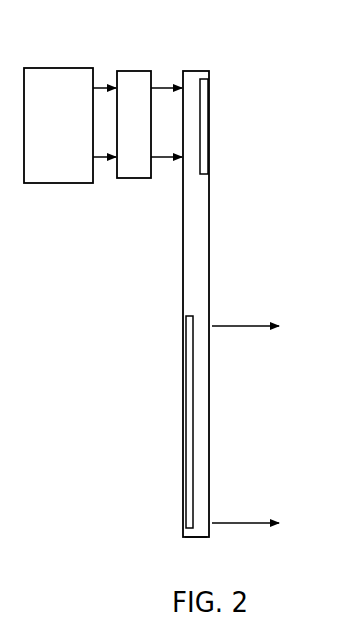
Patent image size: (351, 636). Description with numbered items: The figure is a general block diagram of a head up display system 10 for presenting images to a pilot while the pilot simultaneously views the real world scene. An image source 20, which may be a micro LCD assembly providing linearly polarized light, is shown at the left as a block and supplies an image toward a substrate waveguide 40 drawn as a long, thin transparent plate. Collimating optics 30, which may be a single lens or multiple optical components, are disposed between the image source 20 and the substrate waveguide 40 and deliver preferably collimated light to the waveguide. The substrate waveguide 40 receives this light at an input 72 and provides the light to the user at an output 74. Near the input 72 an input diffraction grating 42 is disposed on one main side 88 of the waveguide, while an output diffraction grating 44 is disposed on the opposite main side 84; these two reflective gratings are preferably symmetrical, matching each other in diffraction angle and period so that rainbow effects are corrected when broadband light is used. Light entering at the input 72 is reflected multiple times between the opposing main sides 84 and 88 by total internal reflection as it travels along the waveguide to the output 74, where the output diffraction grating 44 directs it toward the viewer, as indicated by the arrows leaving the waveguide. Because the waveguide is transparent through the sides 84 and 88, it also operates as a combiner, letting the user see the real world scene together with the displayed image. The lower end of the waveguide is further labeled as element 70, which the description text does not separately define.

The HUD system 10 is at (236, 70).
The image source 20 is at (52, 175).
The collimating optics 30 is at (132, 168).
The substrate waveguide 40 is at (205, 243).
The input diffraction grating 42 is at (183, 84).
The output diffraction grating 44 is at (186, 443).
The second end face 70 is at (202, 530).
The input 72 is at (183, 163).
The output 74 is at (210, 482).
The main side 84 is at (183, 297).
The main side 88 is at (210, 288).